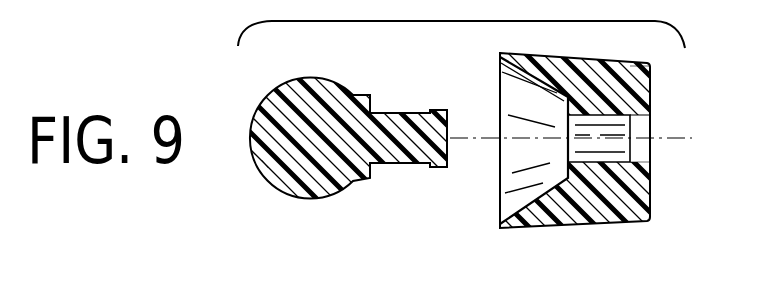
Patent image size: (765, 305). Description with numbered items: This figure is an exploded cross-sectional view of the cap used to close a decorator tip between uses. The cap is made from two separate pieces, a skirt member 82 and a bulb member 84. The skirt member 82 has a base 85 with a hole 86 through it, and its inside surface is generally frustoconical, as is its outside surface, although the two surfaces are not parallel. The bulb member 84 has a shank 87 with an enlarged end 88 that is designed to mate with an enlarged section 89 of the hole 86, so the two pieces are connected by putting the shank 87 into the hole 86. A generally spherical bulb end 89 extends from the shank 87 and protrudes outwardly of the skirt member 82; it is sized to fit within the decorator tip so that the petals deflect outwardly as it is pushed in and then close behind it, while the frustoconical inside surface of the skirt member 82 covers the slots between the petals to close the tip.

The skirt member 82 is at (608, 231).
The bulb member 84 is at (327, 205).
The base 85 is at (651, 81).
The hole 86 is at (610, 125).
The shank 87 is at (411, 170).
The enlarged end 88 is at (441, 110).
The enlarged section / bulb end 89 is at (277, 173).